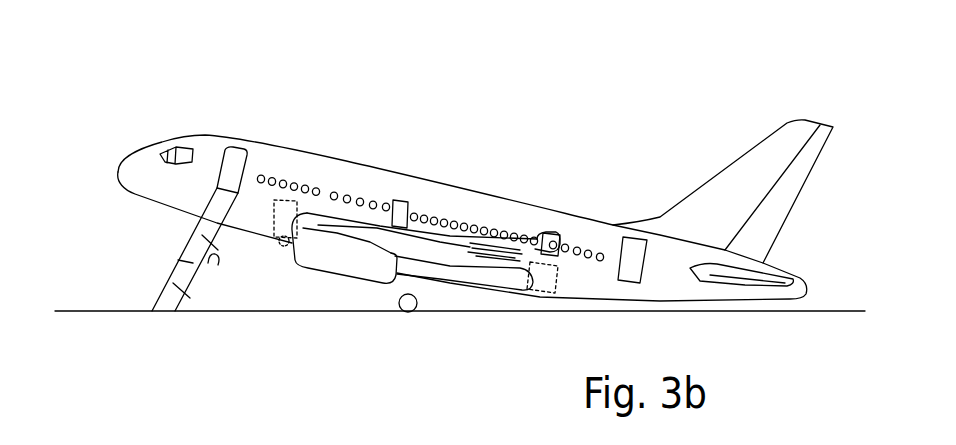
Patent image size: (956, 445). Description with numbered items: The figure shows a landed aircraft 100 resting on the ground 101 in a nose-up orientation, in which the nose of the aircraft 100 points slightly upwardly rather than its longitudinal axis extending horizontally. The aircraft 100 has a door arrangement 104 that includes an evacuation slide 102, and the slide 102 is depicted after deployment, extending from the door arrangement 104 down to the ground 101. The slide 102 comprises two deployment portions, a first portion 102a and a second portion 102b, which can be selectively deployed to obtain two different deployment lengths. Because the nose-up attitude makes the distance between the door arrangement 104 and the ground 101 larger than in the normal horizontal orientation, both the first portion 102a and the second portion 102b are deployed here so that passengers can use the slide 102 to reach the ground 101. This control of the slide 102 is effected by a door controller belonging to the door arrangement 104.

The aircraft 100 is at (549, 92).
The ground 101 is at (762, 313).
The evacuation slide 102 is at (128, 245).
The first portion 102a is at (218, 250).
The second portion 102b is at (190, 298).
The door arrangement 104 is at (233, 142).